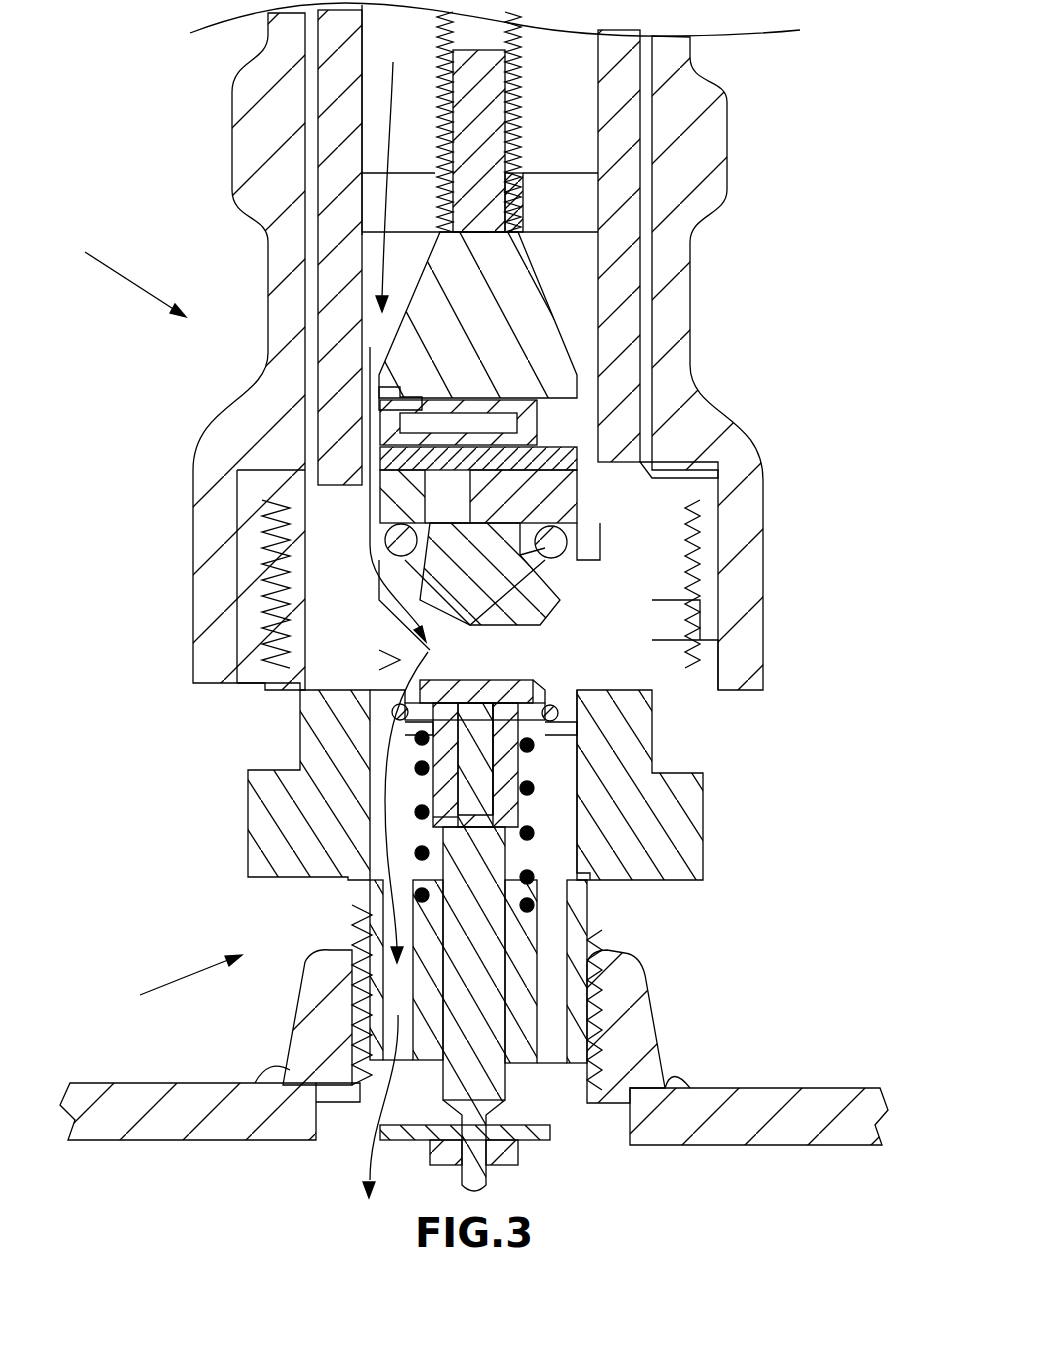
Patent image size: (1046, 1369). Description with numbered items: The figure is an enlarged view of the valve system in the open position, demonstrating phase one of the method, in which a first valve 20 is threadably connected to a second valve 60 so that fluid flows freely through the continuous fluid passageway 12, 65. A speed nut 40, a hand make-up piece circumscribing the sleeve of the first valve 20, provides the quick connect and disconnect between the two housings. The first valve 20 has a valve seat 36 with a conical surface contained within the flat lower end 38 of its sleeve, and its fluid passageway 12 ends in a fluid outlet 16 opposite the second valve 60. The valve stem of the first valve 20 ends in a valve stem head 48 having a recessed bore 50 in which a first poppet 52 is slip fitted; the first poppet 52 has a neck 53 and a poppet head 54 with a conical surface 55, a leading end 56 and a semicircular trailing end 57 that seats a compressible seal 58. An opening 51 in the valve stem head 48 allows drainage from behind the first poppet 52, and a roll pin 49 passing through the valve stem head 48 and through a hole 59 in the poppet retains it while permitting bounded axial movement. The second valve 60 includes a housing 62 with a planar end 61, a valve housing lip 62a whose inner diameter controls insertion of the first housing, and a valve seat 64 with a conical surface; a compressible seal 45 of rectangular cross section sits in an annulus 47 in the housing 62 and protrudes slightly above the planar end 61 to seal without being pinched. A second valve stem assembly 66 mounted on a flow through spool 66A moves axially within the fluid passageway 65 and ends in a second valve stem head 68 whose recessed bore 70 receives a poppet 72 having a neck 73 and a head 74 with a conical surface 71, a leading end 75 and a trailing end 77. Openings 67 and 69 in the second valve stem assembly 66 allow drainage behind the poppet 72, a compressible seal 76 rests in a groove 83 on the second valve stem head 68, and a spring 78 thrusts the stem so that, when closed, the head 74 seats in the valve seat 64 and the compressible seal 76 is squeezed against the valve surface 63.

The speed nut 40 is at (262, 130).
The first valve 20 is at (119, 271).
The fluid passageway 12 is at (388, 343).
The valve stem head 48 is at (495, 308).
The opening 51 is at (392, 397).
The recessed bore 50 is at (537, 410).
The roll pin 49 is at (395, 457).
The hole 59 is at (660, 480).
The neck 53 is at (440, 507).
The first poppet 52 is at (510, 508).
The compressible seal 58 is at (600, 535).
The poppet head 54 is at (523, 562).
The valve housing lip 62a is at (647, 590).
The planar end 61 is at (645, 627).
The valve seat 64 is at (640, 662).
The trailing end 57 is at (393, 558).
The conical surface 55 is at (540, 568).
The leading end 56 is at (500, 583).
The valve seat 36 is at (540, 643).
The annulus 47 is at (305, 628).
The compressible seal 45 is at (315, 660).
The lower end 38 is at (395, 648).
The head 74 is at (417, 693).
The conical surface 71 is at (405, 702).
The fluid outlet 16 is at (484, 665).
The leading end 75 is at (490, 680).
The valve surface 63 is at (552, 668).
The compressible seal 76 is at (600, 708).
The groove 83 is at (545, 718).
The second valve stem head 68 is at (600, 732).
The opening 69 is at (417, 722).
The poppet 72 is at (470, 782).
The trailing end 77 is at (518, 707).
The neck 73 is at (480, 807).
The recessed bore 70 is at (447, 818).
The opening 67 is at (450, 831).
The spring 78 is at (417, 855).
The housing 62 is at (642, 807).
The second valve 60 is at (171, 983).
The fluid passageway 65 is at (412, 1003).
The second valve stem assembly 66 is at (550, 962).
The flow through spool 66A is at (550, 1015).